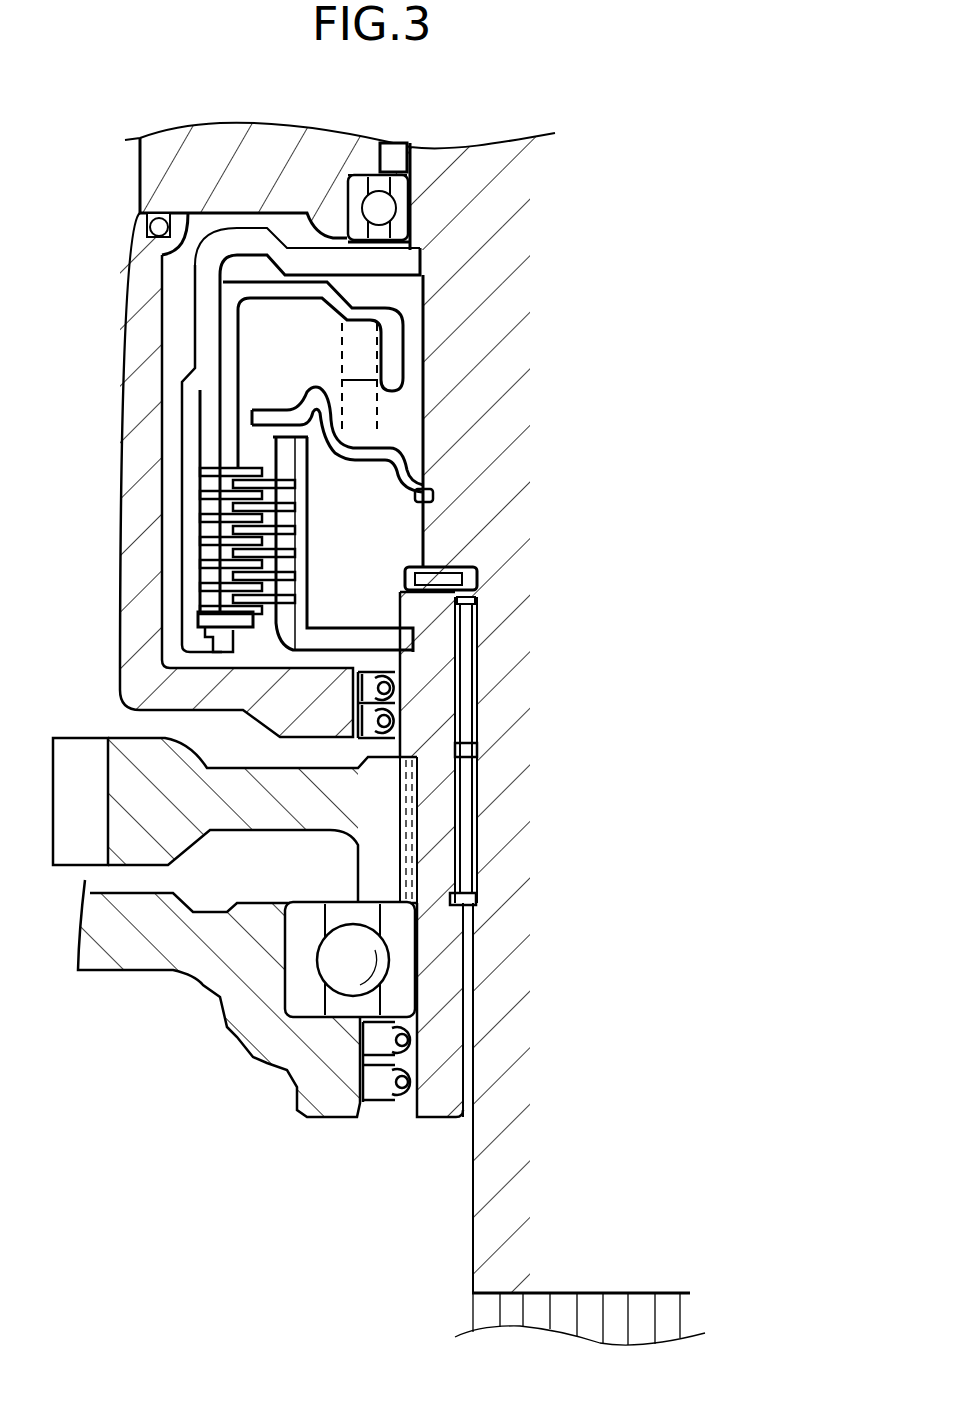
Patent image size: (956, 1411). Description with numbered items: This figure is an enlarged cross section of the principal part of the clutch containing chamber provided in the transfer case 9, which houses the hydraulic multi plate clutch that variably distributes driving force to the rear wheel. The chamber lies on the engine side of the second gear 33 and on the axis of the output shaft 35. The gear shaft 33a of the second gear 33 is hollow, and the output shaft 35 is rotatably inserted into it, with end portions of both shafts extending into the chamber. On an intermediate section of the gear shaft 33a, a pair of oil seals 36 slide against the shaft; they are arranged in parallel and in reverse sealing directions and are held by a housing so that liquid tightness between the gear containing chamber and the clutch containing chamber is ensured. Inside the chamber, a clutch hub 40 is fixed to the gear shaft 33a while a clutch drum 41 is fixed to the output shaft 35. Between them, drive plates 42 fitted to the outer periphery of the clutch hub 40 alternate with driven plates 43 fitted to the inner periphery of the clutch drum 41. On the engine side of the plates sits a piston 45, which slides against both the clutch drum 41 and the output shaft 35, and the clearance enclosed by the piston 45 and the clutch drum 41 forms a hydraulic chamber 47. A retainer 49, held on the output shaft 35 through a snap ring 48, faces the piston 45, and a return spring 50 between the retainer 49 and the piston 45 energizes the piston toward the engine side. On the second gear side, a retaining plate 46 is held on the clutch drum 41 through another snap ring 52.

The transfer case 9 is at (130, 315).
The second gear 33 is at (272, 828).
The gear shaft 33a is at (400, 787).
The output shaft 35 is at (487, 255).
The oil seals 36 is at (397, 687).
The clutch hub 40 is at (400, 640).
The clutch drum 41 is at (182, 413).
The drive plates 42 is at (287, 550).
The driven plates 43 is at (197, 518).
The piston 45 is at (397, 328).
The retaining plate 46 is at (197, 617).
The hydraulic chamber 47 is at (390, 297).
The snap ring 48 is at (433, 493).
The retainer 49 is at (410, 455).
The return spring 50 is at (377, 408).
The snap ring 52 is at (202, 637).